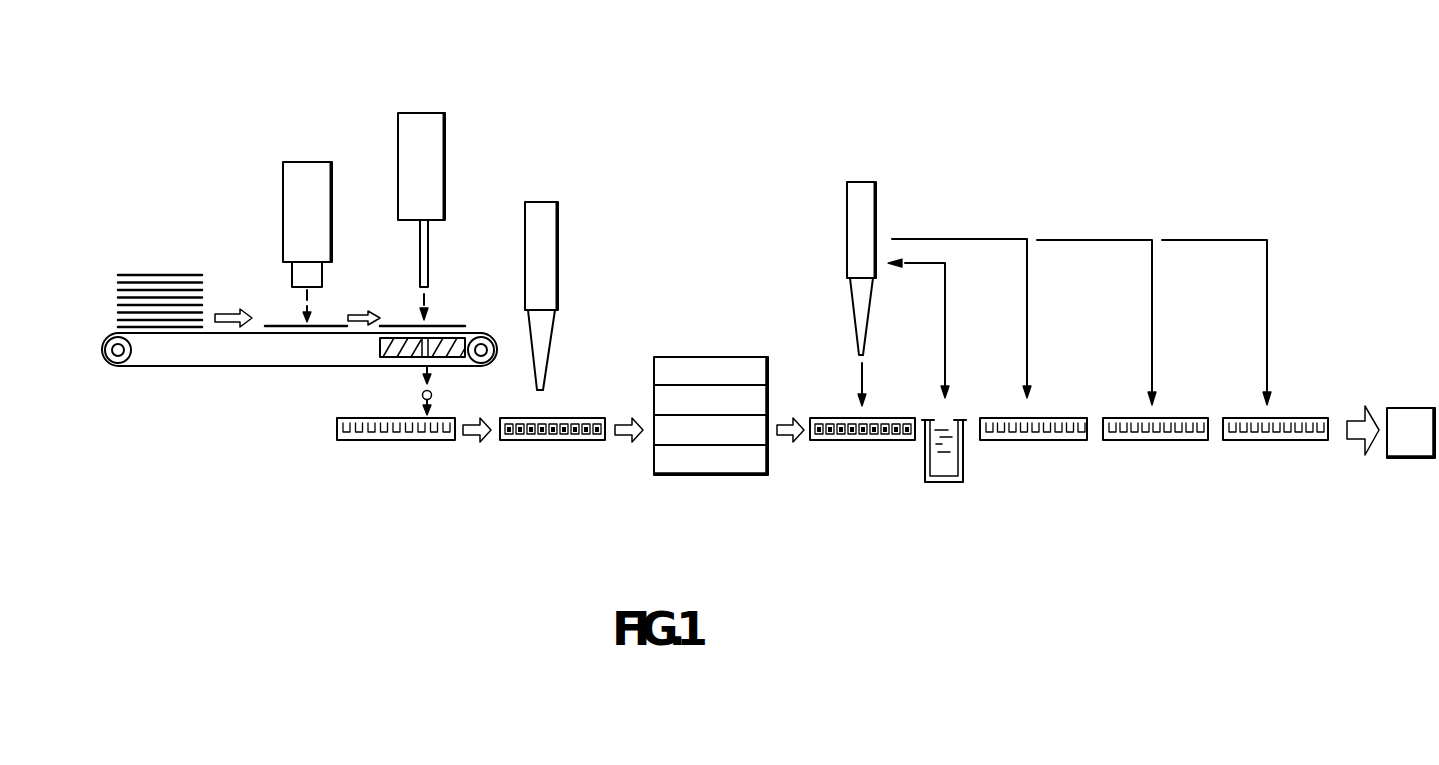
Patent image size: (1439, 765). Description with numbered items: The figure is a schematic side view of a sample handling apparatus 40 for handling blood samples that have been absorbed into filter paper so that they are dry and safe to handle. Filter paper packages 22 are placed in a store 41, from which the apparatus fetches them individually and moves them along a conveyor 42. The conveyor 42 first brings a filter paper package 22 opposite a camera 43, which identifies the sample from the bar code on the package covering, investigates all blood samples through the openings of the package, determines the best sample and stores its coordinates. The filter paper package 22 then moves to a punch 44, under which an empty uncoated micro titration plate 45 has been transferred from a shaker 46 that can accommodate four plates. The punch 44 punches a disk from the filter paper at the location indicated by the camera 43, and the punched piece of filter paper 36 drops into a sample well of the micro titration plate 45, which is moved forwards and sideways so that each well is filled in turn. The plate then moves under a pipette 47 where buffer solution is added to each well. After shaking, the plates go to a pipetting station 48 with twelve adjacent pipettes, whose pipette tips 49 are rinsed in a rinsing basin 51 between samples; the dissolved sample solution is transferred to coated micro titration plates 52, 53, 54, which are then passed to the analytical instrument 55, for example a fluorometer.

The sample handling apparatus 40 is at (742, 108).
The store 41 is at (149, 263).
The conveyor 42 is at (226, 368).
The filter paper package 22 is at (276, 325).
The camera 43 is at (283, 198).
The punch 44 is at (445, 137).
The punched piece of filter paper 36 is at (421, 394).
The micro titration plate 45 is at (403, 441).
The shaker 46 is at (688, 356).
The pipette 47 is at (558, 225).
The pipetting station 48 is at (847, 218).
The pipette tips 49 is at (857, 348).
The rinsing basin 51 is at (965, 463).
The coated micro titration plate 52 is at (1063, 441).
The coated micro titration plate 53 is at (1170, 441).
The coated micro titration plate 54 is at (1280, 441).
The analytical instrument 55 is at (1411, 433).